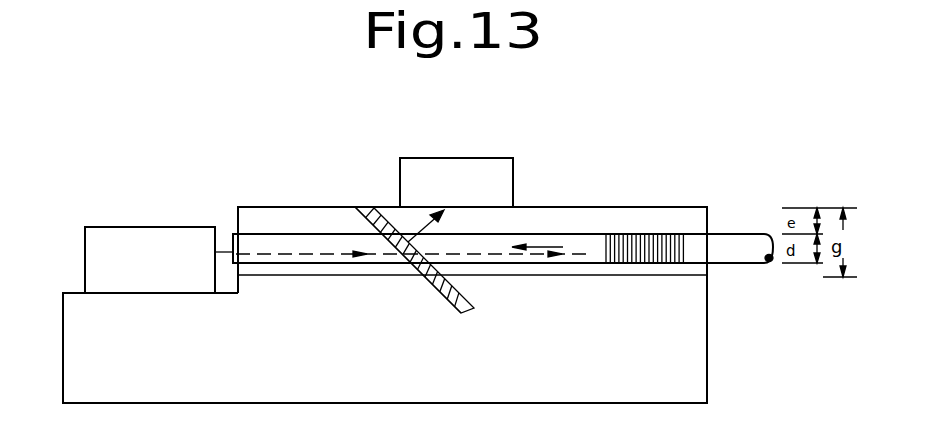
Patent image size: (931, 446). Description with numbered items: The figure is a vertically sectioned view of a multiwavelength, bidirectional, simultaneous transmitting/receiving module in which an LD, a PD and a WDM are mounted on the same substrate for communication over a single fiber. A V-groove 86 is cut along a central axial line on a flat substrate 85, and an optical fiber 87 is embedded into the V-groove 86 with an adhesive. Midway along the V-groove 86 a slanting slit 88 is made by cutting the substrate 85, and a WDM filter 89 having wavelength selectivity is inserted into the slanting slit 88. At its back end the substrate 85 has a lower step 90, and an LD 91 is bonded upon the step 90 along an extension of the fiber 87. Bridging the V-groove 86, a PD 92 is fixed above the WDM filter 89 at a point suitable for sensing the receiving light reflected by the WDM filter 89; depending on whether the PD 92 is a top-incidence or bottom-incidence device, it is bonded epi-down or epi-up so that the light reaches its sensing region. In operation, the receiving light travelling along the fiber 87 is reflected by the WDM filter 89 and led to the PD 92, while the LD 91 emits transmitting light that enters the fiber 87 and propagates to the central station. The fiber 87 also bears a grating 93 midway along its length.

The flat substrate 85 is at (376, 360).
The V-groove 86 is at (573, 224).
The optical fiber 87 is at (728, 255).
The slanting slit 88 is at (369, 208).
The WDM filter 89 is at (357, 208).
The lower step 90 is at (187, 294).
The LD 91 is at (150, 260).
The PD 92 is at (456, 182).
The grating 93 is at (660, 247).